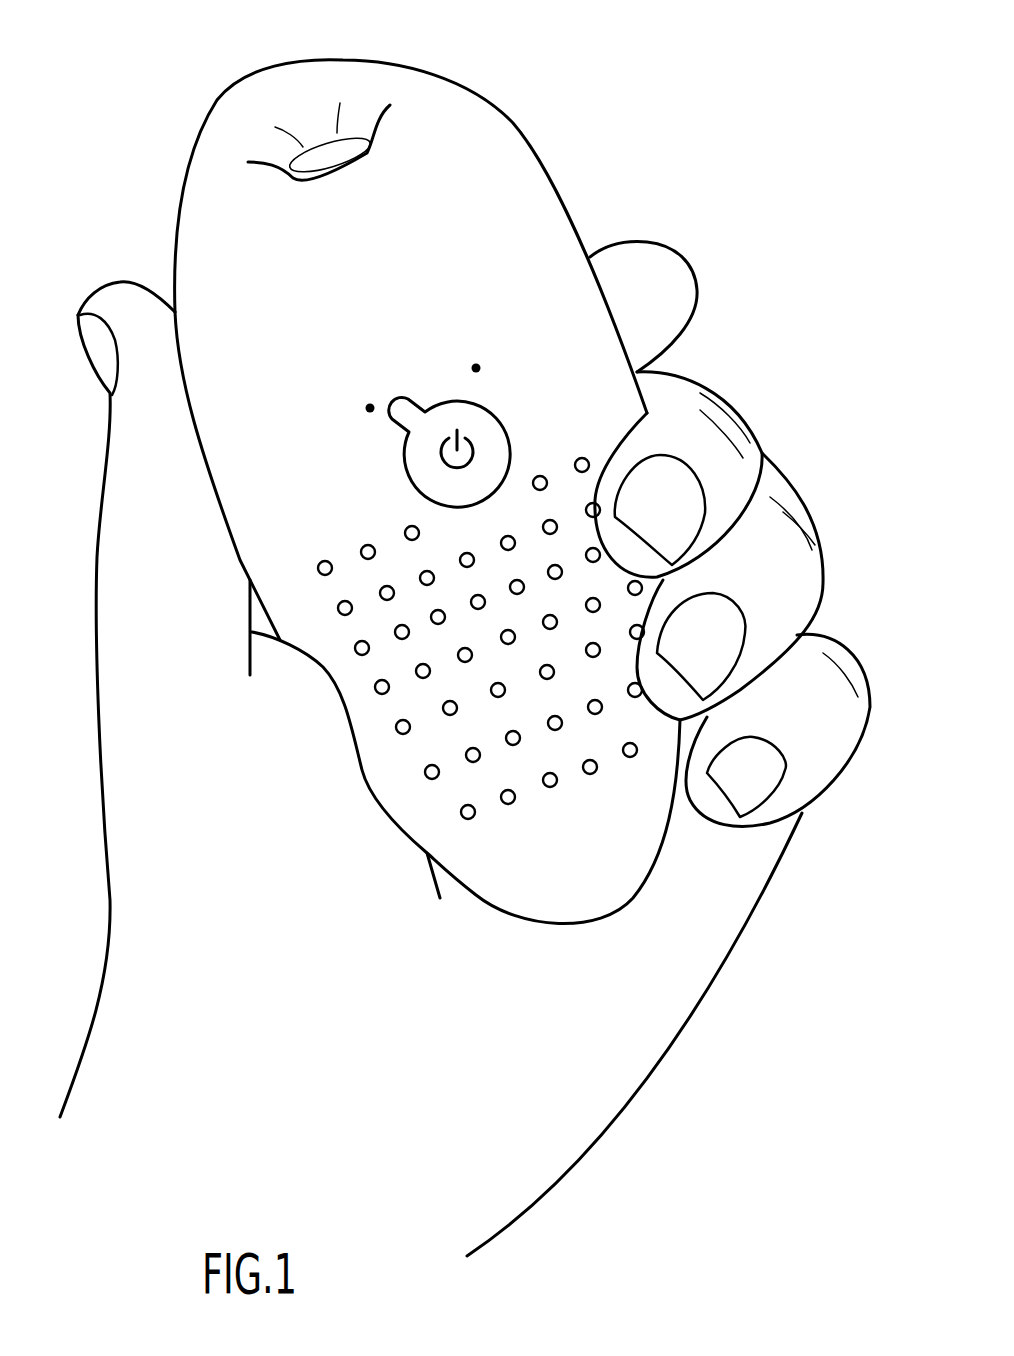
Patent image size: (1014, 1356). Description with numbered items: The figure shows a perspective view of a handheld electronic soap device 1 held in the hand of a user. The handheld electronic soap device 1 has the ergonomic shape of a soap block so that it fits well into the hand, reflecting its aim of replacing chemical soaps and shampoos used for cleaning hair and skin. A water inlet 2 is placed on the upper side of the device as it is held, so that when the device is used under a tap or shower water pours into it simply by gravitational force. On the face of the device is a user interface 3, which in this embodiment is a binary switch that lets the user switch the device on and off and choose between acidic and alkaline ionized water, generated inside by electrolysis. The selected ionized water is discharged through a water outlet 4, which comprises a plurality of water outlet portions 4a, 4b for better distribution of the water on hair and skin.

The handheld electronic soap device 1 is at (345, 730).
The water inlet 2 is at (351, 150).
The user interface 3 is at (495, 415).
The water outlet 4 is at (598, 580).
The water outlet portion 4a is at (600, 650).
The water outlet portion 4b is at (602, 707).